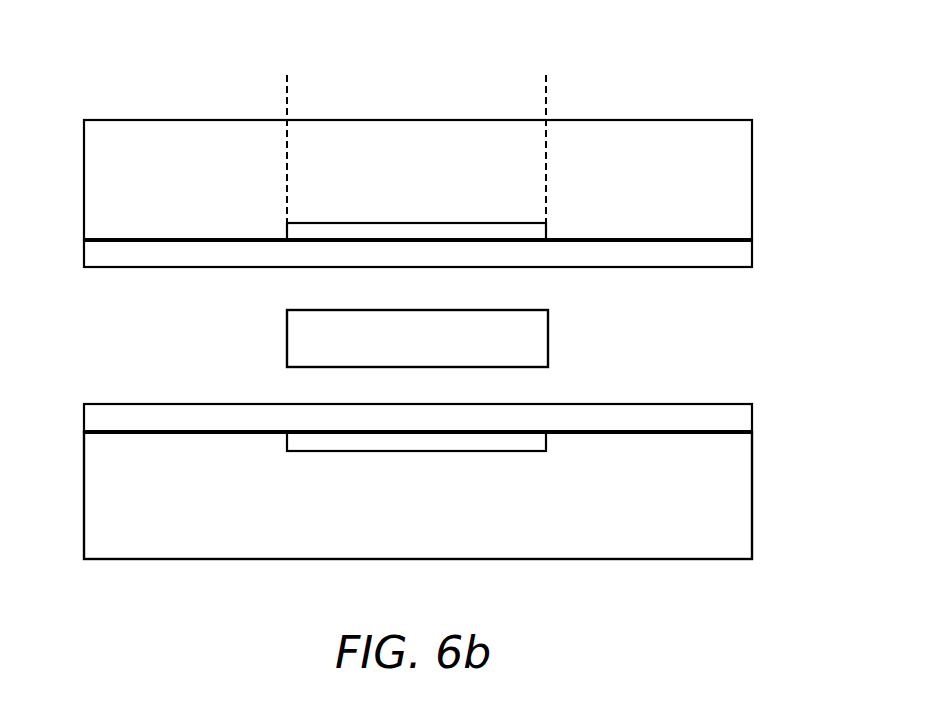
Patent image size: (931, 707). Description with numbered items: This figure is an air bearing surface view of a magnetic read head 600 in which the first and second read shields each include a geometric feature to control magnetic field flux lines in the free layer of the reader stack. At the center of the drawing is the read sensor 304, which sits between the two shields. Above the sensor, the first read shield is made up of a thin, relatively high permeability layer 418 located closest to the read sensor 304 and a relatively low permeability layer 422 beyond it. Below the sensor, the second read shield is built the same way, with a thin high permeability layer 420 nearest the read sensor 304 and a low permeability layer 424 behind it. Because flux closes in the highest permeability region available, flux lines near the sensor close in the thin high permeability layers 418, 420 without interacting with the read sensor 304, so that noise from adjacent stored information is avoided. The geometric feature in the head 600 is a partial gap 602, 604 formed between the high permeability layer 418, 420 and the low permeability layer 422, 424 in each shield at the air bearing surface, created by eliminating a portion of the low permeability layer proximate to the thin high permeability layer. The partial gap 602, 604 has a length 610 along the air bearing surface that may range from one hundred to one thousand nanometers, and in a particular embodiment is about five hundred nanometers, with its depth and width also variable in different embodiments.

The head 600 is at (671, 87).
The length of partial gap 610 is at (546, 83).
The low permeability layer 422 is at (219, 162).
The high permeability layer 418 is at (368, 264).
The partial gap 602 is at (384, 232).
The read sensor 304 is at (369, 346).
The high permeability layer 420 is at (368, 428).
The partial gap 604 is at (388, 440).
The low permeability layer 424 is at (219, 532).